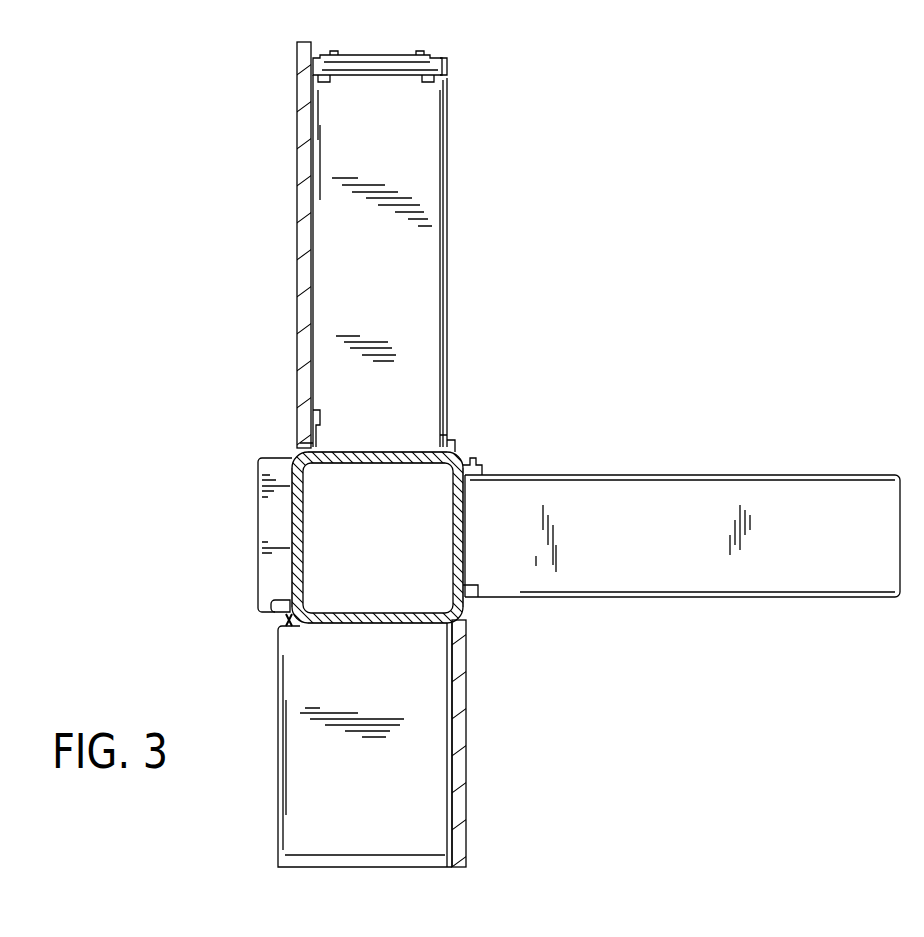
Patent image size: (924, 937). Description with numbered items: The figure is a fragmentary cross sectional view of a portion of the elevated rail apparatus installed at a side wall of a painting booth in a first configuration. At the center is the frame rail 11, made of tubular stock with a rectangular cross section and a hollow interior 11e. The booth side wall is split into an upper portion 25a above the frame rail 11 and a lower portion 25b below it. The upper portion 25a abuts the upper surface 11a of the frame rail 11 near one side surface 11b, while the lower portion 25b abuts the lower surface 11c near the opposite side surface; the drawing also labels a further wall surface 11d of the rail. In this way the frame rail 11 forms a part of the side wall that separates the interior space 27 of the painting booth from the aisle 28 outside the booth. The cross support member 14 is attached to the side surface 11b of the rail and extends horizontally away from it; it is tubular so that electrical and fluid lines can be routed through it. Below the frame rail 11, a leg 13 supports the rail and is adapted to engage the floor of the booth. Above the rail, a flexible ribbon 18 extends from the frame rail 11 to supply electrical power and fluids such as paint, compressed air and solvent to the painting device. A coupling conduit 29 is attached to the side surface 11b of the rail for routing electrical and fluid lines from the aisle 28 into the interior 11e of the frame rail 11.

The frame rail 11 is at (288, 626).
The upper surface 11a is at (400, 450).
The side surface 11b is at (294, 520).
The lower surface 11c is at (332, 623).
The right wall of connector block 11d is at (462, 575).
The hollow interior 11e is at (394, 563).
The leg 13 is at (278, 752).
The cross support member 14 is at (660, 575).
The flexible ribbon 18 is at (405, 155).
The upper portion 25a is at (297, 243).
The lower portion 25b is at (460, 728).
The interior space 27 is at (634, 320).
The aisle 28 is at (152, 369).
The coupling conduit 29 is at (275, 572).